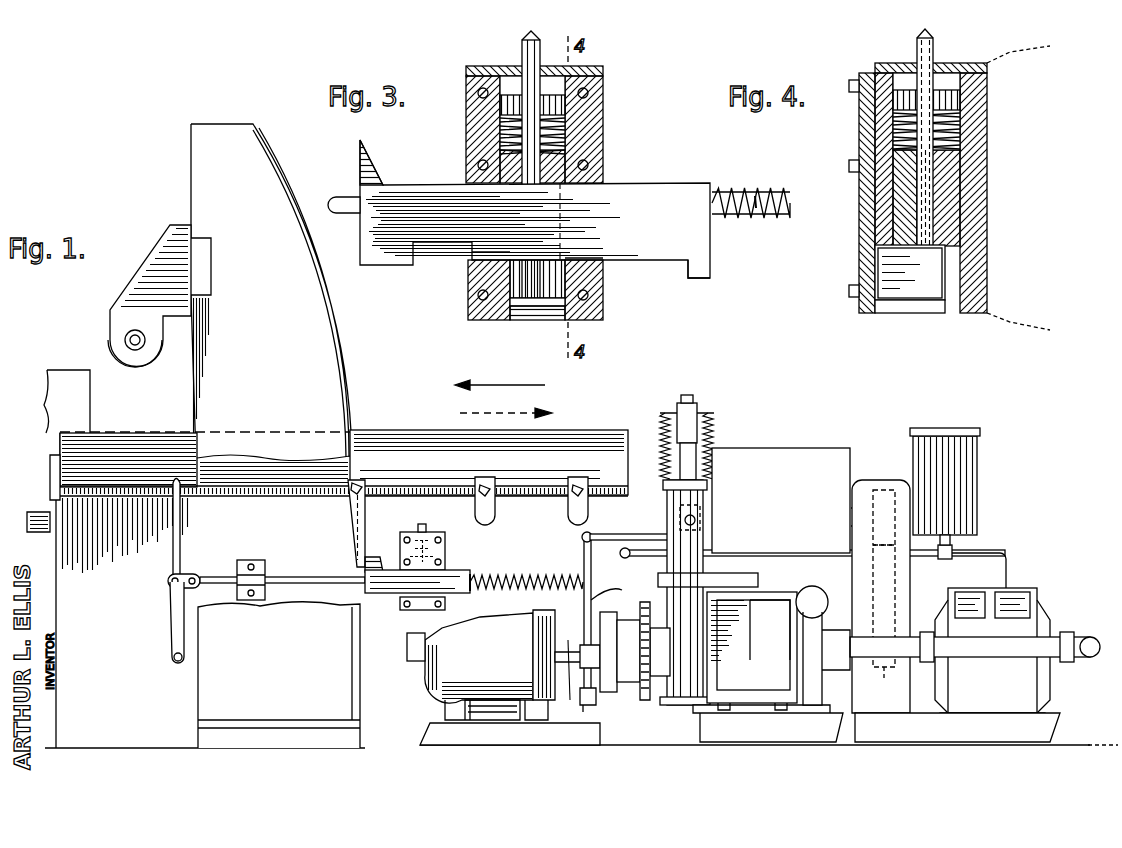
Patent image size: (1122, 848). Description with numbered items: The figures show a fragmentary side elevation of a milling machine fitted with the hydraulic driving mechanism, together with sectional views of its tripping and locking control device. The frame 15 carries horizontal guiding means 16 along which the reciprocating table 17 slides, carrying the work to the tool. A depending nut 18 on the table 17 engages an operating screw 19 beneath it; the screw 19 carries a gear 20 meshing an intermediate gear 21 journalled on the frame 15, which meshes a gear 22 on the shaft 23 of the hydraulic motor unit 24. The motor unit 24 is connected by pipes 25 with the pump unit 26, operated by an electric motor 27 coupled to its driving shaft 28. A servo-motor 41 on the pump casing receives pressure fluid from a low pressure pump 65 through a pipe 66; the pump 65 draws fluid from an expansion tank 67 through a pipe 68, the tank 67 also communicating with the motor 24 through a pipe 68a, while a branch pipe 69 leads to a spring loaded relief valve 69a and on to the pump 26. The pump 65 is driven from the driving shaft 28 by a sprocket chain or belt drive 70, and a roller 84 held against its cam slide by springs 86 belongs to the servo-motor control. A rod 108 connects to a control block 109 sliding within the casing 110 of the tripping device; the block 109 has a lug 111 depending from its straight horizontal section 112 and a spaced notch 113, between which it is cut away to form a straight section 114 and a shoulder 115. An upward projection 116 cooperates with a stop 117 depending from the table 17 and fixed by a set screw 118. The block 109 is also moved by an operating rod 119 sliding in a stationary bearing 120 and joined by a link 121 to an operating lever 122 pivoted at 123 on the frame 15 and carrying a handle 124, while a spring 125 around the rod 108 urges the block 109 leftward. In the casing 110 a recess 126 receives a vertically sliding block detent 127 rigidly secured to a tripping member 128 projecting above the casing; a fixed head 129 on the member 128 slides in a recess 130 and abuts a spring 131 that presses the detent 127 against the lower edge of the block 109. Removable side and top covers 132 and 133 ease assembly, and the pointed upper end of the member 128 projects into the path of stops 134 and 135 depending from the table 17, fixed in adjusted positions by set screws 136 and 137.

In FIG. 1, the frame 15 is at (330, 385).
In FIG. 1, the horizontal guiding means 16 is at (778, 448).
In FIG. 1, the reciprocating table 17 is at (590, 428).
In FIG. 1, the depending nut 18 is at (125, 545).
In FIG. 1, the operating screw 19 is at (35, 510).
In FIG. 1, the gear 20 is at (883, 480).
In FIG. 1, the intermediate gear 21 is at (895, 573).
In FIG. 1, the gear 22 is at (881, 626).
In FIG. 1, the shaft 23 is at (918, 630).
In FIG. 1, the motor unit 24 is at (1020, 588).
In FIG. 1, the pipes 25 is at (1000, 657).
In FIG. 1, the pump unit 26 is at (771, 664).
In FIG. 1, the electric motor 27 is at (503, 677).
In FIG. 1, the driving shaft 28 is at (580, 675).
In FIG. 1, the servo-motor 41 is at (710, 540).
In FIG. 1, the low pressure pump 65 is at (598, 593).
In FIG. 1, the pipe 66 is at (582, 538).
In FIG. 1, the expansion tank 67 is at (977, 484).
In FIG. 1, the pipe 68 is at (800, 550).
In FIG. 1, the pipe 68a is at (985, 553).
In FIG. 1, the branch pipe 69 is at (630, 690).
In FIG. 1, the spring loaded relief valve 69a is at (586, 712).
In FIG. 1, the sprocket chain or belt drive 70 is at (660, 690).
In FIG. 1, the roller 84 is at (695, 520).
In FIG. 1, the springs 86 is at (710, 430).
In FIG. 3, the rod 108 is at (788, 212).
In FIG. 1, the rod 108 is at (525, 575).
In FIG. 3, the control block 109 is at (535, 209).
In FIG. 4, the control block 109 is at (885, 215).
In FIG. 1, the control block 109 is at (462, 575).
In FIG. 3, the casing 110 is at (603, 133).
In FIG. 4, the casing 110 is at (875, 133).
In FIG. 3, the lug 111 is at (698, 275).
In FIG. 3, the straight horizontal section 112 is at (643, 265).
In FIG. 3, the notch 113 is at (430, 245).
In FIG. 3, the straight section 114 is at (500, 250).
In FIG. 3, the shoulder 115 is at (580, 258).
In FIG. 3, the projection 116 is at (378, 158).
In FIG. 1, the projection 116 is at (364, 568).
In FIG. 1, the stop 117 is at (350, 532).
In FIG. 1, the set screw 118 is at (365, 483).
In FIG. 3, the operating rod 119 is at (340, 213).
In FIG. 1, the operating rod 119 is at (310, 585).
In FIG. 1, the stationary bearing 120 is at (248, 588).
In FIG. 1, the link 121 is at (172, 592).
In FIG. 1, the operating lever 122 is at (180, 548).
In FIG. 1, the pivot 123 is at (176, 664).
In FIG. 1, the handle 124 is at (210, 470).
In FIG. 3, the spring 125 is at (757, 213).
In FIG. 1, the spring 125 is at (500, 602).
In FIG. 3, the recess 126 is at (548, 315).
In FIG. 4, the recess 126 is at (915, 313).
In FIG. 3, the block detent 127 is at (530, 290).
In FIG. 4, the block detent 127 is at (940, 275).
In FIG. 3, the tripping member 128 is at (522, 52).
In FIG. 4, the tripping member 128 is at (933, 200).
In FIG. 1, the tripping member 128 is at (425, 527).
In FIG. 4, the fixed head 129 is at (960, 102).
In FIG. 3, the recess 130 is at (565, 87).
In FIG. 3, the spring 131 is at (500, 126).
In FIG. 4, the spring 131 is at (960, 130).
In FIG. 4, the side cover 132 is at (860, 300).
In FIG. 3, the top cover 133 is at (600, 66).
In FIG. 4, the top cover 133 is at (955, 63).
In FIG. 1, the stop 134 is at (495, 512).
In FIG. 1, the stop 135 is at (588, 512).
In FIG. 1, the set screw 136 is at (488, 482).
In FIG. 1, the set screw 137 is at (580, 482).